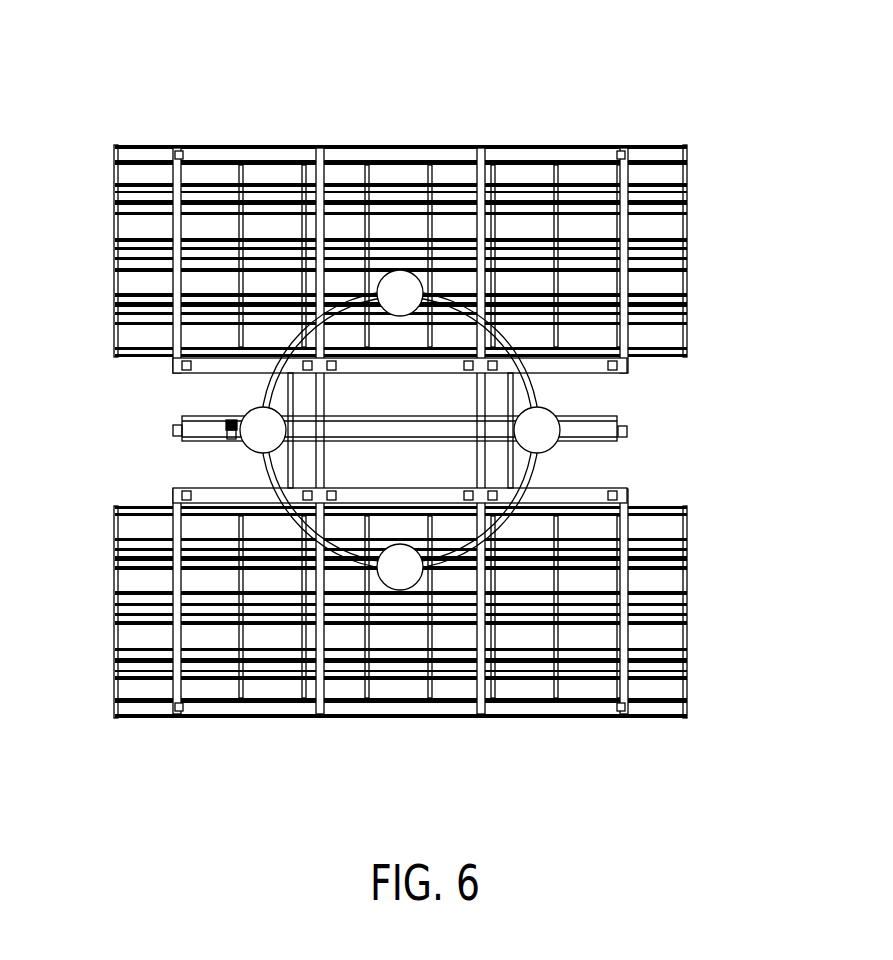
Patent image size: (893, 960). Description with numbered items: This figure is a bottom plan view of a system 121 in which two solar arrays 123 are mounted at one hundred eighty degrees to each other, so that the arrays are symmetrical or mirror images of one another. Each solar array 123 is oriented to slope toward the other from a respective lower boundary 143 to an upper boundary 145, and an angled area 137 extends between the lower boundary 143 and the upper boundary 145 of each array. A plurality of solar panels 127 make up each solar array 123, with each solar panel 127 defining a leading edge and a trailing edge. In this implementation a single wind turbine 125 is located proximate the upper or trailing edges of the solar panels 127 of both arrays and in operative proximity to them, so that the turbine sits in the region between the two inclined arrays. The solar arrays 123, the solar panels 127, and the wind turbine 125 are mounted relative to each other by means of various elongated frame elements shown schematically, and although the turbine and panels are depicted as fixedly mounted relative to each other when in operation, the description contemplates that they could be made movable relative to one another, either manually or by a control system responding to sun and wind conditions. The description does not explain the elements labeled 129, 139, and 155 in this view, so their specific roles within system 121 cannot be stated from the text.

The system 121 is at (185, 85).
The solar array 123 is at (553, 125).
The wind turbine 125 is at (140, 422).
The solar panel 127 is at (673, 178).
The drive beam 129 is at (615, 422).
The angled area 137 is at (100, 272).
The cross support member 139 is at (452, 125).
The lower boundary 143 is at (353, 145).
The upper boundary 145 is at (145, 357).
The circular track 155 is at (267, 473).